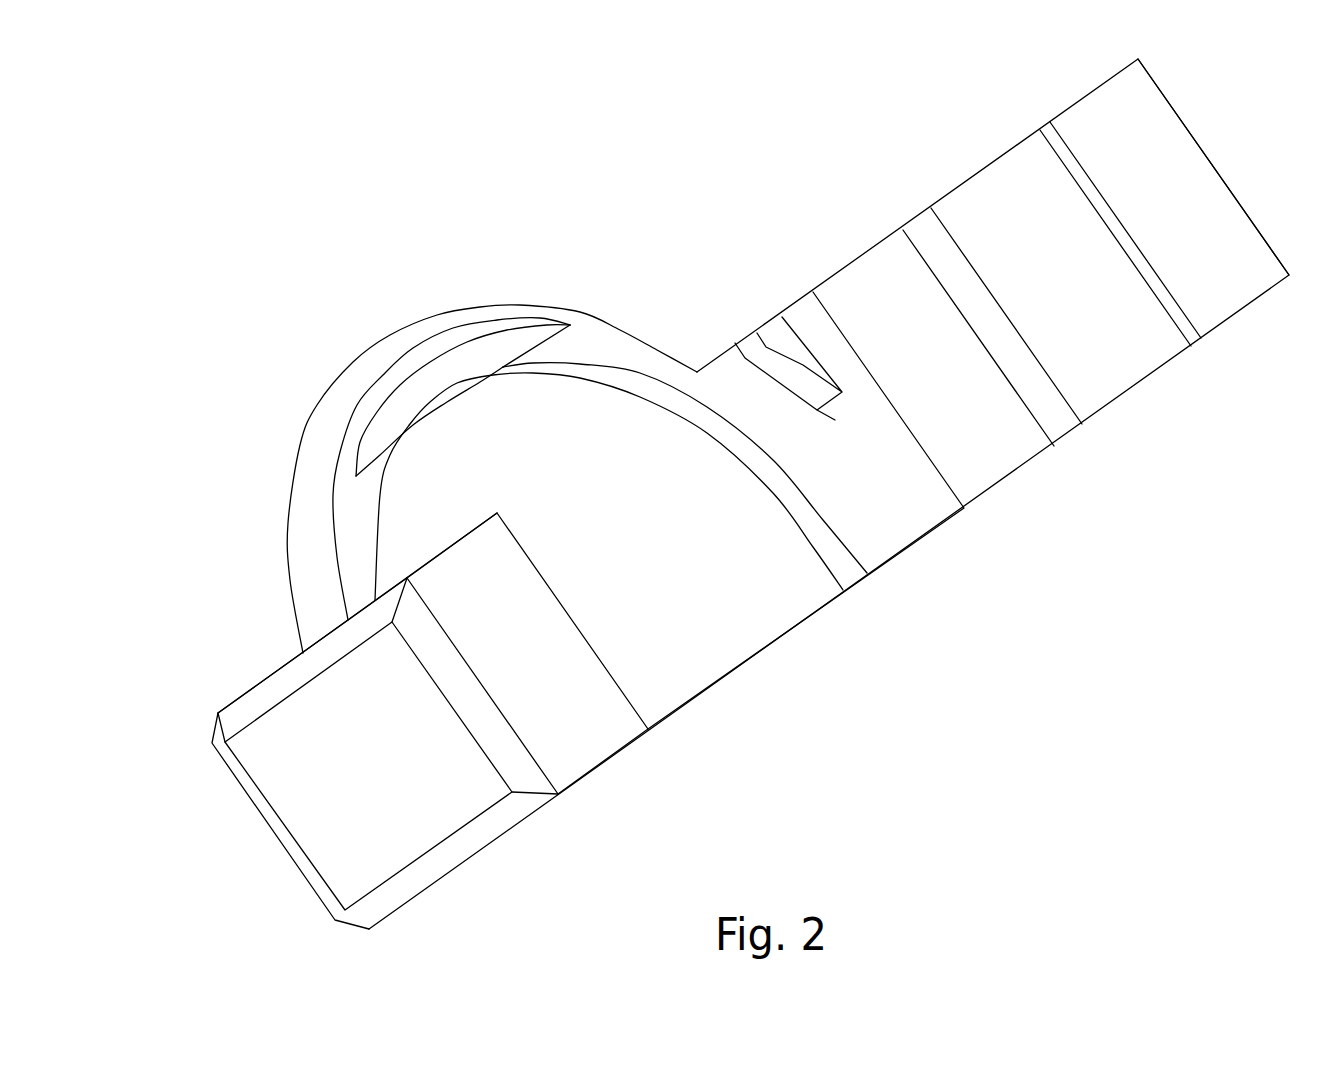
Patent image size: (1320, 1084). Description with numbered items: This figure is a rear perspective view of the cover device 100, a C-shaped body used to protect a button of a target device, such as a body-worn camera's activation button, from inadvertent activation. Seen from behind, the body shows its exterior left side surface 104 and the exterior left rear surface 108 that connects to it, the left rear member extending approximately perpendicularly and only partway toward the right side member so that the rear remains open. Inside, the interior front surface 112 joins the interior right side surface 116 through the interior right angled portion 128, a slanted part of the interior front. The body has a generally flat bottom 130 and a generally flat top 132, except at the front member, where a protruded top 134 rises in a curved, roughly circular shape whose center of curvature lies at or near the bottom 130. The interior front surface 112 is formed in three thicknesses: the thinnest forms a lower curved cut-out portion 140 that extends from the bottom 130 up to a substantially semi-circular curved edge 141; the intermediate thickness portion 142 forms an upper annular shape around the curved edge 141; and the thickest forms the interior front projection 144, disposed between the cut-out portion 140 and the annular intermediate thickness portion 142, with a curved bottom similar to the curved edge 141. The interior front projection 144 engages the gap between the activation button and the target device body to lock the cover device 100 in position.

The cover device 100 is at (240, 72).
The exterior left side surface 104 is at (343, 777).
The exterior left rear surface 108 is at (525, 658).
The interior front surface 112 is at (727, 580).
The interior right side surface 116 is at (1098, 340).
The interior right angled portion 128 is at (955, 412).
The bottom 130 is at (667, 722).
The flat top 132 is at (870, 250).
The protruded top 134 is at (328, 445).
The lower curved cut-out portion 140 is at (632, 622).
The curved edge 141 is at (618, 392).
The intermediate thickness portion 142 is at (612, 343).
The interior front projection 144 is at (428, 388).